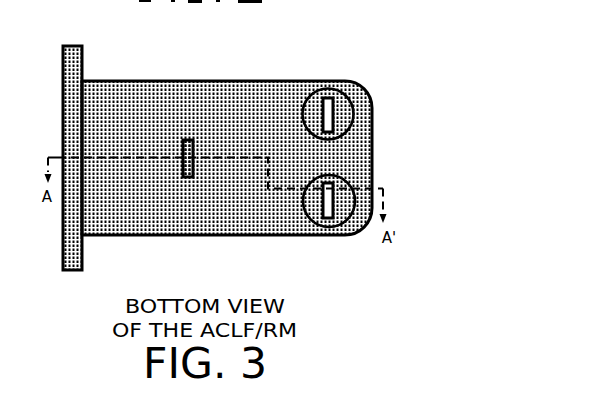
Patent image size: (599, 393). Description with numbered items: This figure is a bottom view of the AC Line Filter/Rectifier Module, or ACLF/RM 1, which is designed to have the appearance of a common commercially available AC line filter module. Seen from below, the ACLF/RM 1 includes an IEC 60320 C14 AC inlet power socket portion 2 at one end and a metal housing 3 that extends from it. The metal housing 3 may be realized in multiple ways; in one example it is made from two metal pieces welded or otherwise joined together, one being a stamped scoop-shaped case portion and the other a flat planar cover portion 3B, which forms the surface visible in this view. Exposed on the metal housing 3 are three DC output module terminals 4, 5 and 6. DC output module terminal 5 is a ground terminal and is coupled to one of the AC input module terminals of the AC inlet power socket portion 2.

The AC Line Filter/Rectifier Module (ACLF/RM) 1 is at (243, 117).
The IEC 60320 C14 AC inlet power socket portion 2 is at (73, 44).
The metal housing 3 is at (243, 144).
The flat planar cover portion 3B is at (162, 118).
The DC output module terminal 4 is at (343, 197).
The DC output module terminal 5 is at (188, 179).
The DC output module terminal 6 is at (341, 103).